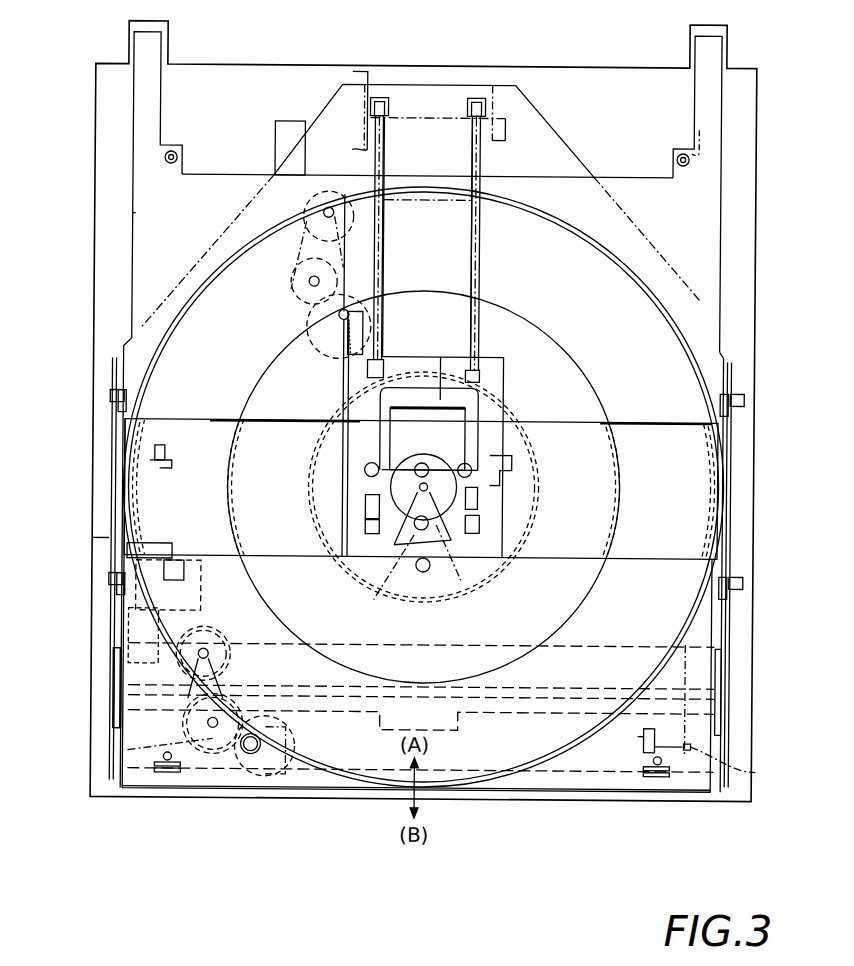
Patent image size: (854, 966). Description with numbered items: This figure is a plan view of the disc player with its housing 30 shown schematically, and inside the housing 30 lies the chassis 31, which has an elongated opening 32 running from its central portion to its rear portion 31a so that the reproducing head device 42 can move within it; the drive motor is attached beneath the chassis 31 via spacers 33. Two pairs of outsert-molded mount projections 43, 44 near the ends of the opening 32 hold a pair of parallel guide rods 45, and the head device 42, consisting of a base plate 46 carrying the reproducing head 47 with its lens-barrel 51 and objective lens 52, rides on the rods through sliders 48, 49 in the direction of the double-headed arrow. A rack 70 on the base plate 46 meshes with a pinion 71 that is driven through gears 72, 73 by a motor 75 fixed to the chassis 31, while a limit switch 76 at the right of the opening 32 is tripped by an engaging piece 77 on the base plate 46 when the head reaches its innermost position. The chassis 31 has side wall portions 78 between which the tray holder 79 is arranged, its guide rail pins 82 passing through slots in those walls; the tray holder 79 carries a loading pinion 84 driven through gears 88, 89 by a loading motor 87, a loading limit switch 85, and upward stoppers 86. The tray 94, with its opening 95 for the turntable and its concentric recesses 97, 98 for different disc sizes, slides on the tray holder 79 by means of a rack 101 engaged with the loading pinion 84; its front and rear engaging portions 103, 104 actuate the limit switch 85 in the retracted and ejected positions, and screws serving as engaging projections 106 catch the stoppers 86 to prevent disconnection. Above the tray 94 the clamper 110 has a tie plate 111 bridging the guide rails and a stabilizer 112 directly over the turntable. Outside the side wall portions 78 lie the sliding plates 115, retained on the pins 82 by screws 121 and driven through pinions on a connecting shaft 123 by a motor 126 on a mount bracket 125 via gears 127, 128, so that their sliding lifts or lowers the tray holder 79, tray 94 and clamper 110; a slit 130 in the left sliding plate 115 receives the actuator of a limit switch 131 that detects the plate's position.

The housing 30 is at (754, 212).
The chassis 31 is at (556, 160).
The rear portion 31a is at (440, 95).
The elongated opening 32 is at (432, 120).
The spacers 33 is at (360, 467).
The reproducing head device 42 is at (440, 370).
The mount projections 43 is at (366, 527).
The mount projections 44 is at (386, 104).
The guide rods 45 is at (382, 237).
The base plate 46 is at (398, 358).
The reproducing head 47 is at (452, 407).
The sliders 48 is at (367, 370).
The sliders 49 is at (479, 375).
The lens-barrel 51 is at (478, 400).
The objective lens 52 is at (465, 430).
The rack 70 is at (310, 340).
The pinion 71 is at (338, 317).
The gear 72 is at (295, 290).
The gear 73 is at (290, 268).
The motor 75 is at (327, 192).
The limit switch 76 is at (512, 468).
The engaging piece 77 is at (485, 490).
The side wall portions 78 is at (112, 368).
The tray holder 79 is at (568, 795).
The pins 82 is at (118, 405).
The loading pinion 84 is at (253, 755).
The loading limit switch 85 is at (640, 735).
The stoppers 86 is at (172, 774).
The loading motor 87 is at (230, 630).
The gear 88 is at (215, 755).
The gear 89 is at (130, 752).
The tray 94 is at (131, 214).
The opening 95 is at (348, 268).
The second largest recess 97 is at (528, 616).
The smallest recess 98 is at (402, 590).
The rack 101 is at (270, 777).
The front engaging portion 103 is at (740, 766).
The rear engaging portion 104 is at (690, 152).
The engaging projections 106 is at (175, 155).
The clamper 110 is at (640, 414).
The tie plate 111 is at (668, 420).
The stabilizer 112 is at (450, 548).
The sliding plates 115 is at (115, 445).
The screws 121 is at (110, 398).
The connecting shaft 123 is at (583, 692).
The mount bracket 125 is at (160, 560).
The motor 126 is at (173, 552).
The gear 127 is at (116, 665).
The gear 128 is at (130, 645).
The slit 130 is at (123, 520).
The limit switch 131 is at (165, 460).